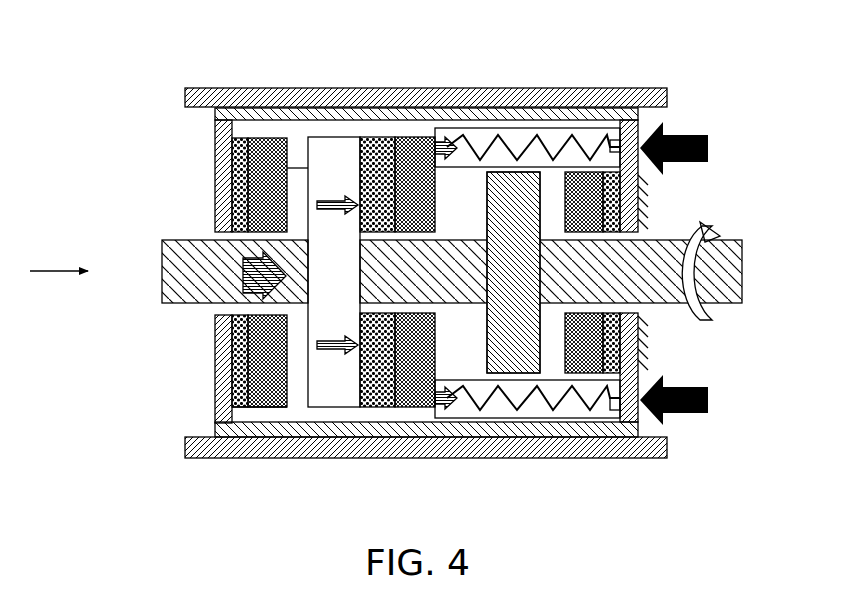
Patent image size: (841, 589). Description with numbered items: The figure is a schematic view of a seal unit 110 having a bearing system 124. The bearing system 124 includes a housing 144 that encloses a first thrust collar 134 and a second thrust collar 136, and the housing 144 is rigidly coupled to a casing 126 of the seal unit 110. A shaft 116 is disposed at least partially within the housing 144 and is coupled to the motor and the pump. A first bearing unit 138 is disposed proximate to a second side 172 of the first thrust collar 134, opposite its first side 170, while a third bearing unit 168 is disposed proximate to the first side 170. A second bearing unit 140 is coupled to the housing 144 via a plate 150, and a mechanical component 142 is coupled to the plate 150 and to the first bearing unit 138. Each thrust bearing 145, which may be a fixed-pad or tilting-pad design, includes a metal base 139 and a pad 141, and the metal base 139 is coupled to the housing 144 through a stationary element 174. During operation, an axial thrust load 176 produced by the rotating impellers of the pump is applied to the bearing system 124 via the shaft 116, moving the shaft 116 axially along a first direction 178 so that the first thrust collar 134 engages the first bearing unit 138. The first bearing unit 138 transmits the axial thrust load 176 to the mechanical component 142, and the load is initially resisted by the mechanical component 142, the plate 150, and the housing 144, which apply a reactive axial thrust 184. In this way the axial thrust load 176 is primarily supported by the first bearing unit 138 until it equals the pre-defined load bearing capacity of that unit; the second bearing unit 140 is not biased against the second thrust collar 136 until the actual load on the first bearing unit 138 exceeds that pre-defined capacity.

The seal unit 110 is at (178, 97).
The shaft 116 is at (742, 272).
The bearing system 124 is at (674, 111).
The casing 126 is at (297, 88).
The first thrust collar 134 is at (330, 150).
The second thrust collar 136 is at (510, 190).
The first bearing unit 138 is at (399, 133).
The metal base 139 is at (238, 440).
The second bearing unit 140 is at (600, 345).
The pad 141 is at (268, 410).
The mechanical component 142 is at (583, 132).
The housing 144 is at (214, 118).
The thrust bearing 145 is at (253, 340).
The plate 150 is at (640, 214).
The third bearing unit 168 is at (253, 414).
The first side 170 is at (250, 176).
The second side 172 is at (380, 318).
The stationary element 174 is at (214, 398).
The axial thrust load 176 is at (243, 280).
The first direction 178 is at (48, 268).
The reactive axial thrust 184 is at (708, 148).